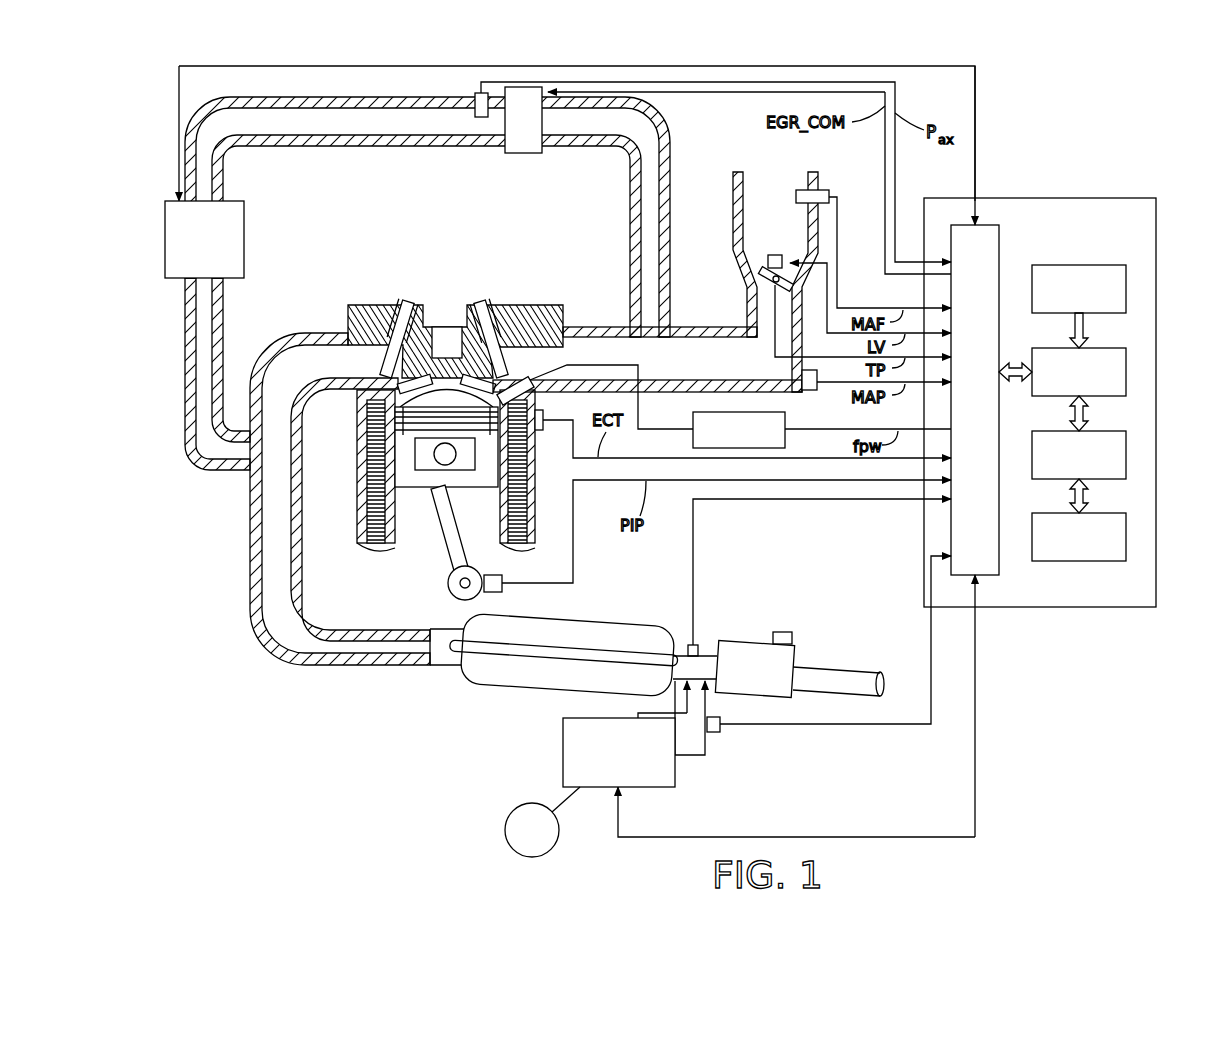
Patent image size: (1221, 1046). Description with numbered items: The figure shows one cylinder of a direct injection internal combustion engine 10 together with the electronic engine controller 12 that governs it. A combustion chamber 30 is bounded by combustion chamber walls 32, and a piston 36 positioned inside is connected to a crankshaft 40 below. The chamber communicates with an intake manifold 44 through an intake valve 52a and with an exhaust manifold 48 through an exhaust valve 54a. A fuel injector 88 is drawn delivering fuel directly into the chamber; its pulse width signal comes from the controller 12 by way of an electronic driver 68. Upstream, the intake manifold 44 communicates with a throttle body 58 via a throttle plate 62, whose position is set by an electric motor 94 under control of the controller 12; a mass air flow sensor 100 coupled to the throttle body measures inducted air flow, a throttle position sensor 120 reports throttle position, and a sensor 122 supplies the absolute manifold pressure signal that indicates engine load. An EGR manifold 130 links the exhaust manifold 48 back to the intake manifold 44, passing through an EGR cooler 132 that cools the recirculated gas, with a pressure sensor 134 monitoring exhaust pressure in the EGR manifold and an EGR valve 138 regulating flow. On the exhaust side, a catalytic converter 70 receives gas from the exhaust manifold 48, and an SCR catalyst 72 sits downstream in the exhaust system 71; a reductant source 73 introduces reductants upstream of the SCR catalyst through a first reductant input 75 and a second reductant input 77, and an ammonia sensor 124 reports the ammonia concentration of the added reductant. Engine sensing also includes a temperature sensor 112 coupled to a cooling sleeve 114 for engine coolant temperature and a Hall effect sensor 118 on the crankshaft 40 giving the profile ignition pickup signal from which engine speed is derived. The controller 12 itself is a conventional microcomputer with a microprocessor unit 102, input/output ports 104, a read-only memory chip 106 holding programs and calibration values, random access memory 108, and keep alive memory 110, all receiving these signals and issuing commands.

The direct injection internal combustion engine 10 is at (558, 240).
The electronic engine controller 12 is at (1068, 198).
The combustion chamber 30 is at (365, 443).
The combustion chamber walls 32 is at (396, 553).
The piston 36 is at (428, 487).
The crankshaft 40 is at (448, 592).
The intake manifold 44 is at (710, 373).
The exhaust manifold 48 is at (283, 357).
The intake valve 52a is at (497, 378).
The exhaust valve 54a is at (400, 378).
The throttle body 58 is at (762, 320).
The throttle plate 62 is at (769, 272).
The electronic driver 68 is at (693, 421).
The catalytic converter 70 is at (605, 613).
The exhaust system 71 is at (689, 646).
The SCR catalyst 72 is at (762, 641).
The reductant source 73 is at (546, 841).
The first reductant input 75 is at (650, 713).
The second reductant input 77 is at (700, 757).
The fuel injector 88 is at (539, 394).
The electric motor 94 is at (776, 255).
The mass air flow sensor 100 is at (806, 190).
The microprocessor unit 102 is at (1032, 370).
The input/output ports 104 is at (985, 225).
The read-only memory chip 106 is at (1032, 287).
The random access memory 108 is at (1032, 453).
The keep alive memory 110 is at (1032, 535).
The temperature sensor 112 is at (543, 428).
The cooling sleeve 114 is at (533, 508).
The Hall effect sensor 118 is at (505, 582).
The throttle position sensor 120 is at (752, 282).
The sensor 122 is at (811, 391).
The ammonia sensor 124 is at (722, 728).
The EGR manifold 130 is at (355, 134).
The EGR cooler 132 is at (221, 251).
The pressure sensor 134 is at (479, 92).
The EGR valve 138 is at (539, 130).